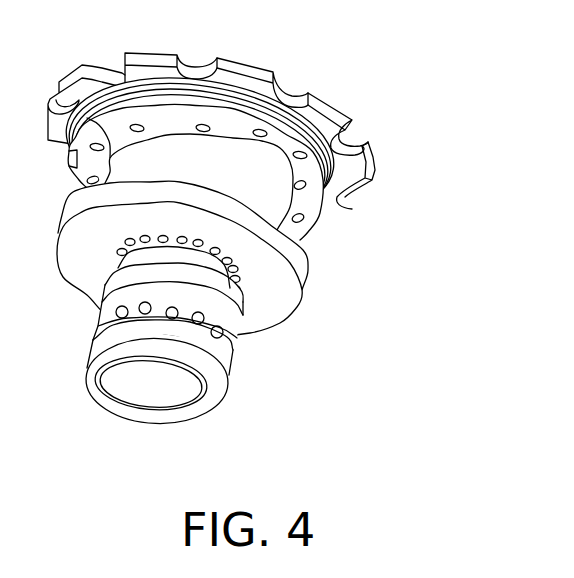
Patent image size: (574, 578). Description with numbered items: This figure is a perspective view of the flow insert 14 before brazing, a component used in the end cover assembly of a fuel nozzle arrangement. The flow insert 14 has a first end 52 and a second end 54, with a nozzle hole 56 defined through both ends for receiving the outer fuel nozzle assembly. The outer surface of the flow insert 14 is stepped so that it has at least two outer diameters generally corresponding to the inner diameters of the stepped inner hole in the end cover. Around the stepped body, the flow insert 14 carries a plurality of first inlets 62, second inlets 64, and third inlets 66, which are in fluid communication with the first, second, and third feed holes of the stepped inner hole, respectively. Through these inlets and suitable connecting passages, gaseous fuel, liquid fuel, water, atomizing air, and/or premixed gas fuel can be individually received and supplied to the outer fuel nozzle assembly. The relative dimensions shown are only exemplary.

The flow insert 14 is at (353, 80).
The first end 52 is at (239, 63).
The second end 54 is at (97, 382).
The nozzle hole 56 is at (158, 398).
The first inlets 62 is at (247, 284).
The second inlets 64 is at (310, 178).
The third inlets 66 is at (205, 318).